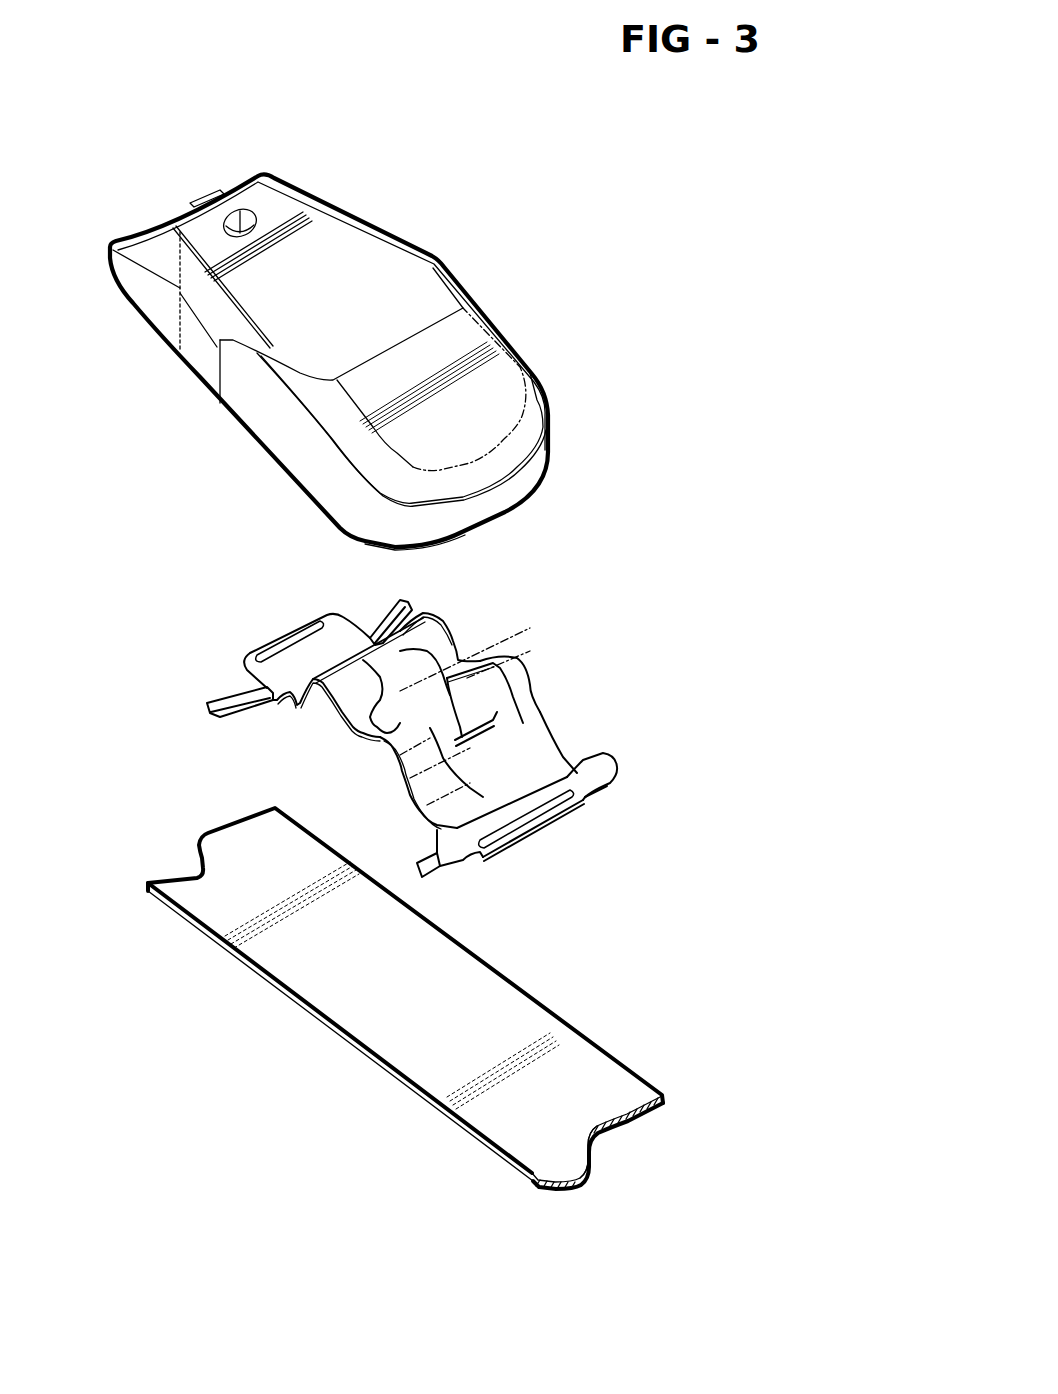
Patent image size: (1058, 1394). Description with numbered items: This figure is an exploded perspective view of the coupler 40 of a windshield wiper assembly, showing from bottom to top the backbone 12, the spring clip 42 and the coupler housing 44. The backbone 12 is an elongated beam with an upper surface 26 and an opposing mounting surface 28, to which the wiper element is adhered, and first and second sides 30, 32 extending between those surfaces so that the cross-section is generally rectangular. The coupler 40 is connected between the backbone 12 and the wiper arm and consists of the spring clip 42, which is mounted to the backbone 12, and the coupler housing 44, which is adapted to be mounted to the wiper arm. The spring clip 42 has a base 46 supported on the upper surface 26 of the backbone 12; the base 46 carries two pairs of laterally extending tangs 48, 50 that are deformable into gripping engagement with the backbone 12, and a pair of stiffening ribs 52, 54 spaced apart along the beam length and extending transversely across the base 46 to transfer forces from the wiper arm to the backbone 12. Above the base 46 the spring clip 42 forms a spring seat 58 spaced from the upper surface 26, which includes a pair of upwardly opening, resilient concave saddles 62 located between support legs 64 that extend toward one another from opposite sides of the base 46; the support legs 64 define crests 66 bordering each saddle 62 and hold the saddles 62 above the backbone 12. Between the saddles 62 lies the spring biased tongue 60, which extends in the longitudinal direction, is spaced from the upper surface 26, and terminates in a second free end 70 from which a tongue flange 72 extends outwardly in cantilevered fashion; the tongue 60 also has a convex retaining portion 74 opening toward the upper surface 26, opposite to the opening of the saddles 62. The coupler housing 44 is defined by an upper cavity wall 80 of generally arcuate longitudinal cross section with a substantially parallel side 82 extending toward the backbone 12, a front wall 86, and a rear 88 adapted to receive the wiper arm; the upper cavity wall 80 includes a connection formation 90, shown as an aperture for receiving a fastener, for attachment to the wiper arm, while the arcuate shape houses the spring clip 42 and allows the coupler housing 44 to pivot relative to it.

The backbone 12 is at (596, 1038).
The upper surface 26 is at (500, 1030).
The mounting surface 28 is at (495, 1153).
The first side 30 is at (370, 1057).
The second side 32 is at (650, 1083).
The coupler 40 is at (650, 418).
The spring clip 42 is at (648, 675).
The coupler housing 44 is at (488, 310).
The base 46 is at (553, 783).
The tangs 48 is at (383, 610).
The tangs 50 is at (430, 857).
The stiffening rib 52 is at (287, 640).
The stiffening rib 54 is at (537, 808).
The spring seat 58 is at (455, 630).
The spring biased tongue 60 is at (462, 712).
The concave saddles 62 is at (363, 717).
The support legs 64 is at (277, 703).
The crests 66 is at (387, 741).
The second free end 70 is at (445, 690).
The tongue flange 72 is at (473, 733).
The convex retaining portion 74 is at (357, 712).
The upper cavity wall 80 is at (500, 392).
The side 82 is at (200, 352).
The front wall 86 is at (505, 495).
The rear 88 is at (174, 230).
The connection formation 90 is at (252, 222).